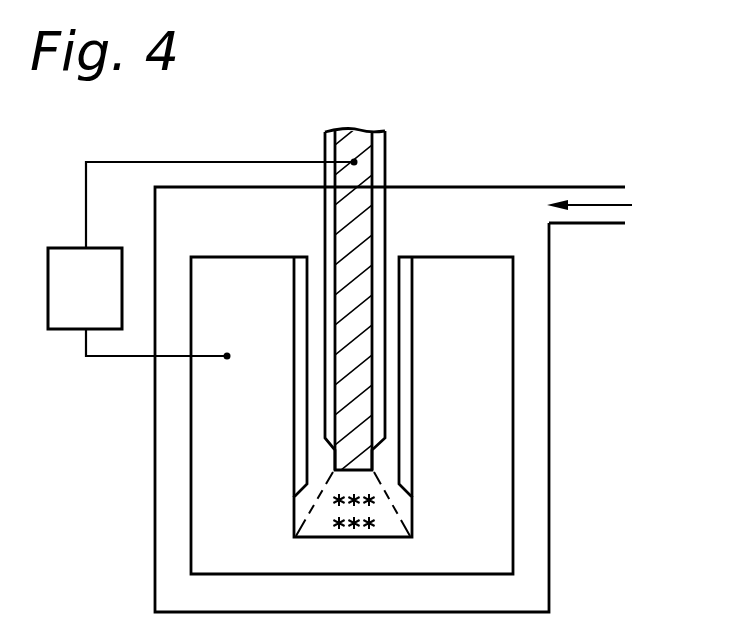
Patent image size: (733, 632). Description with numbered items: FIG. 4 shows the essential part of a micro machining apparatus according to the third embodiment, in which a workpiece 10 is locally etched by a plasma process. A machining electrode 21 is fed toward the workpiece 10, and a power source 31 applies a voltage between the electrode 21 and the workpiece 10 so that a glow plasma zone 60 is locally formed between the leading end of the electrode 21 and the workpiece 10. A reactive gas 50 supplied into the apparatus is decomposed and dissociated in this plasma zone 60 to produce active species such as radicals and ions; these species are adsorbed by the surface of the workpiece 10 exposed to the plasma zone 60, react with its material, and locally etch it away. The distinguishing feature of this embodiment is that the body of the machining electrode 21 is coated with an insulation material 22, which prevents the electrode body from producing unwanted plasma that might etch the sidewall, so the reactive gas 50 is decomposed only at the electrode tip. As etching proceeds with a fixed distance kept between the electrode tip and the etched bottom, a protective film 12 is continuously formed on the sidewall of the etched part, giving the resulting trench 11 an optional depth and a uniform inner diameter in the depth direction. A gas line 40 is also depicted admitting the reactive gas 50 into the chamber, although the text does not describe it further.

The workpiece 10 is at (493, 477).
The trench 11 is at (393, 265).
The protective film 12 is at (407, 398).
The machining electrode 21 is at (362, 172).
The insulation material 22 is at (379, 144).
The power source 31 is at (65, 317).
The gas inlet pipe 40 is at (560, 187).
The reactive gas 50 is at (608, 203).
The plasma zone 60 is at (336, 510).